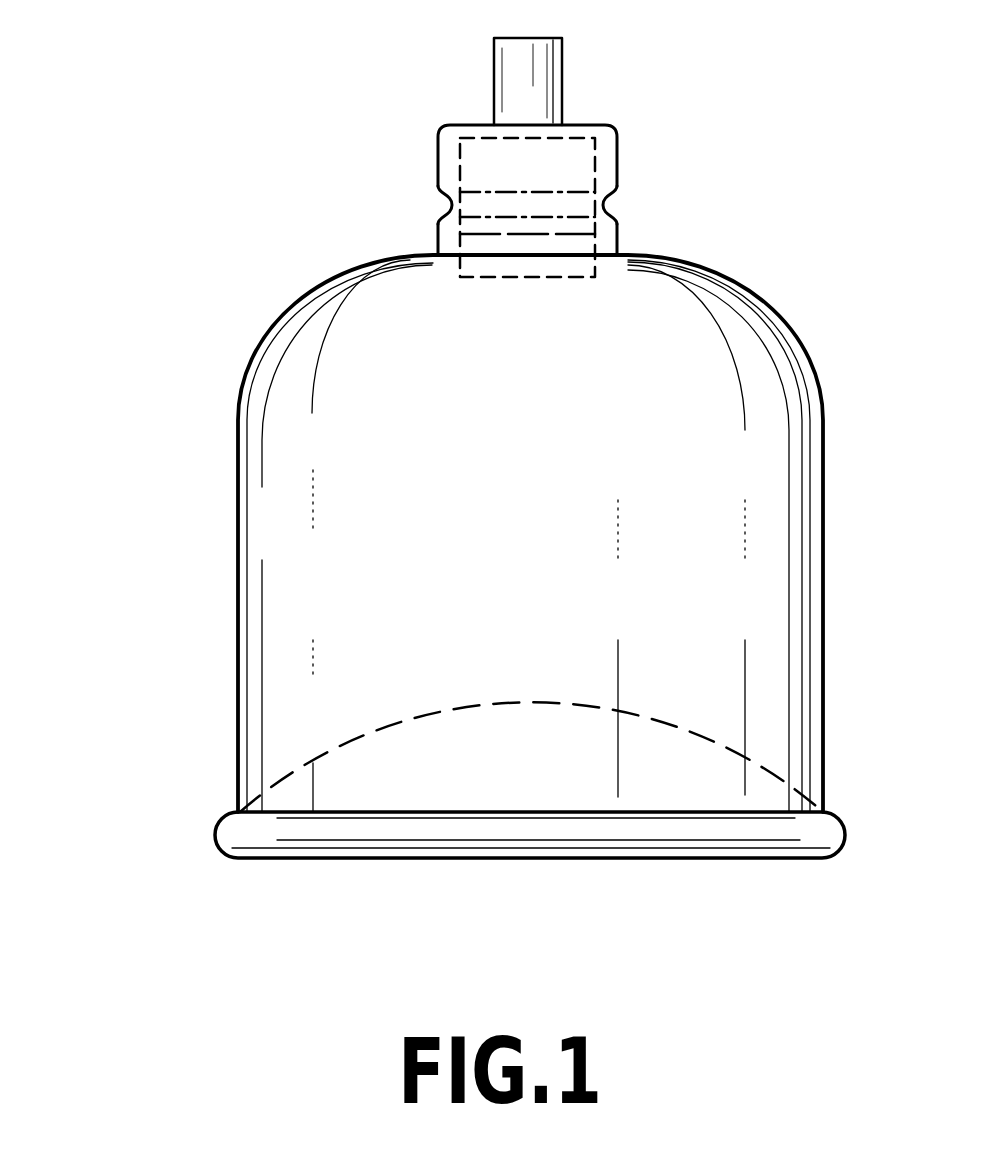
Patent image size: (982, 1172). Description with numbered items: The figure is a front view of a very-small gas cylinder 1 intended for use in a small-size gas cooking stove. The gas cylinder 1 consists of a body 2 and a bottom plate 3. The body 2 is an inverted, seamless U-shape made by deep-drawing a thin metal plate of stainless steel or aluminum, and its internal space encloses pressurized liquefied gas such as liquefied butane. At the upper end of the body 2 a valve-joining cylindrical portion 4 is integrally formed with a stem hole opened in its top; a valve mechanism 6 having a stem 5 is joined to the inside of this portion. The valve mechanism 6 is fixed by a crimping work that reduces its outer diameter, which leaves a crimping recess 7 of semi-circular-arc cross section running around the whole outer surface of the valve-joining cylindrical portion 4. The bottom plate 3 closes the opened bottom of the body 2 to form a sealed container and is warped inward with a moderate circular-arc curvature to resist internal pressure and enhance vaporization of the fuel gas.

The gas cylinder 1 is at (150, 88).
The body 2 is at (272, 515).
The bottom plate 3 is at (357, 740).
The valve-joining cylindrical portion 4 is at (455, 150).
The stem 5 is at (494, 58).
The valve mechanism 6 is at (595, 178).
The crimping recess 7 is at (447, 201).